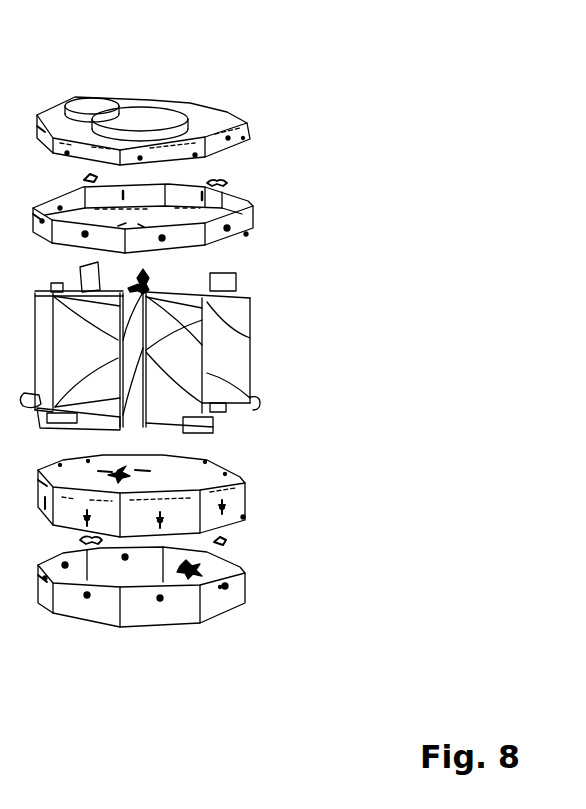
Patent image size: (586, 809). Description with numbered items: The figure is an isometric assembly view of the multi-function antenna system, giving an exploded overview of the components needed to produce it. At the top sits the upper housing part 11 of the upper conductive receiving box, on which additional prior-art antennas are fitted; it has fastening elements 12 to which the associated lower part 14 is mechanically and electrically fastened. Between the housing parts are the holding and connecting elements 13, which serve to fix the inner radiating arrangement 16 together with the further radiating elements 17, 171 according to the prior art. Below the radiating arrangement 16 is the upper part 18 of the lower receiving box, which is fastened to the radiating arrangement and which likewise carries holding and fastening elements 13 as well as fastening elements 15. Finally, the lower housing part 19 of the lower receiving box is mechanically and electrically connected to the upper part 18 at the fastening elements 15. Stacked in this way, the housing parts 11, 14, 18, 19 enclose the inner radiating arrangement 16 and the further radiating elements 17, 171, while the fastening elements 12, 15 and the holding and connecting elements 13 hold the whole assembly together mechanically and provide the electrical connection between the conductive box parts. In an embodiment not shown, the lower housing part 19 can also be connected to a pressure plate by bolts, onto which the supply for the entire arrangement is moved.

The upper housing part 11 is at (243, 93).
The fastening elements 12 is at (244, 137).
The holding and connecting elements 13 is at (233, 183).
The lower part 14 is at (270, 220).
The fastening elements 15 is at (248, 236).
The inner radiating arrangement 16 is at (272, 340).
The further radiating elements 17 is at (260, 397).
The further radiating elements 171 is at (213, 432).
The upper part of the lower receiving box 18 is at (267, 499).
The lower housing part 19 is at (252, 644).